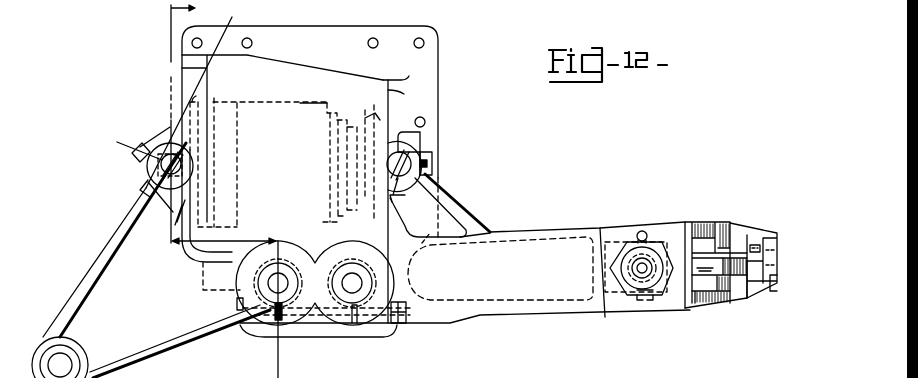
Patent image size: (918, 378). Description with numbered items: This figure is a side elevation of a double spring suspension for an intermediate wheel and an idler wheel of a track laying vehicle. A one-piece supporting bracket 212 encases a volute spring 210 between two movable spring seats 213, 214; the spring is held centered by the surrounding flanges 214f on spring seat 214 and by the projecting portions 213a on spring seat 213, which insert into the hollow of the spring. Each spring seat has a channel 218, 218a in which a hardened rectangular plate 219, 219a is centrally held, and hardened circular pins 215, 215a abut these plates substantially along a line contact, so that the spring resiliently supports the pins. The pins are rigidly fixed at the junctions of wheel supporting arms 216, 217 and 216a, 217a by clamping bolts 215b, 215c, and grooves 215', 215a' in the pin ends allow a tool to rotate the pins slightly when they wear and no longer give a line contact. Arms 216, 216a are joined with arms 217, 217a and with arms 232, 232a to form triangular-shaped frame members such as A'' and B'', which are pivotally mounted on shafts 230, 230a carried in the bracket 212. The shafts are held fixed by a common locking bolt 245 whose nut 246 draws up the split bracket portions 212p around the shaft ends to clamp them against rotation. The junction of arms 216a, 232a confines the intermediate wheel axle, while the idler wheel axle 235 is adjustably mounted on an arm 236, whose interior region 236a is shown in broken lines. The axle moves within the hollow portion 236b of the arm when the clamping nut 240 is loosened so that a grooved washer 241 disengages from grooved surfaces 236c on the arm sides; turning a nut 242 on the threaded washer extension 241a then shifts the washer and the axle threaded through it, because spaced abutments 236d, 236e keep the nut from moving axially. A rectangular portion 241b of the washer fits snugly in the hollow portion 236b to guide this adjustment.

The volute spring 210 is at (303, 104).
The bracket 212 is at (319, 31).
The split bracket portions 212p is at (270, 312).
The spring seat 213 is at (366, 116).
The projecting portions 213a is at (323, 145).
The spring seat 214 is at (213, 101).
The surrounding flanges 214f is at (205, 99).
The pin 215 is at (419, 167).
The groove 215' is at (437, 161).
The pin 215a is at (122, 185).
The groove 215a' is at (124, 143).
The clamping bolt 215b is at (421, 135).
The clamping bolt 215c is at (132, 163).
The wheel supporting arm 216 is at (470, 218).
The wheel supporting arm 216a is at (103, 247).
The wheel supporting arm 217 is at (410, 218).
The wheel supporting arm 217a is at (192, 256).
The channel 218 is at (400, 196).
The channel 218a is at (161, 205).
The hardened rectangular plate 219 is at (380, 163).
The hardened rectangular plate 219a is at (185, 165).
The shaft 230 is at (282, 262).
The shaft 230a is at (352, 262).
The arm 232 is at (430, 242).
The arm 232a is at (172, 347).
The idler wheel axle 235 is at (637, 285).
The arm 236 is at (545, 233).
The housing cavity 236a is at (500, 268).
The hollow portion 236b is at (719, 236).
The grooved surfaces 236c is at (697, 220).
The abutment 236d is at (742, 297).
The abutment 236e is at (773, 286).
The clamping nut 240 is at (620, 281).
The washer 241 is at (666, 232).
The threaded washer extension 241a is at (692, 281).
The washer portion 241b is at (613, 237).
The nut 242 is at (753, 249).
The locking bolt 245 is at (234, 304).
The nut 246 is at (407, 323).
The triangular-shaped frame member A'' is at (94, 299).
The triangular-shaped frame member B'' is at (472, 192).